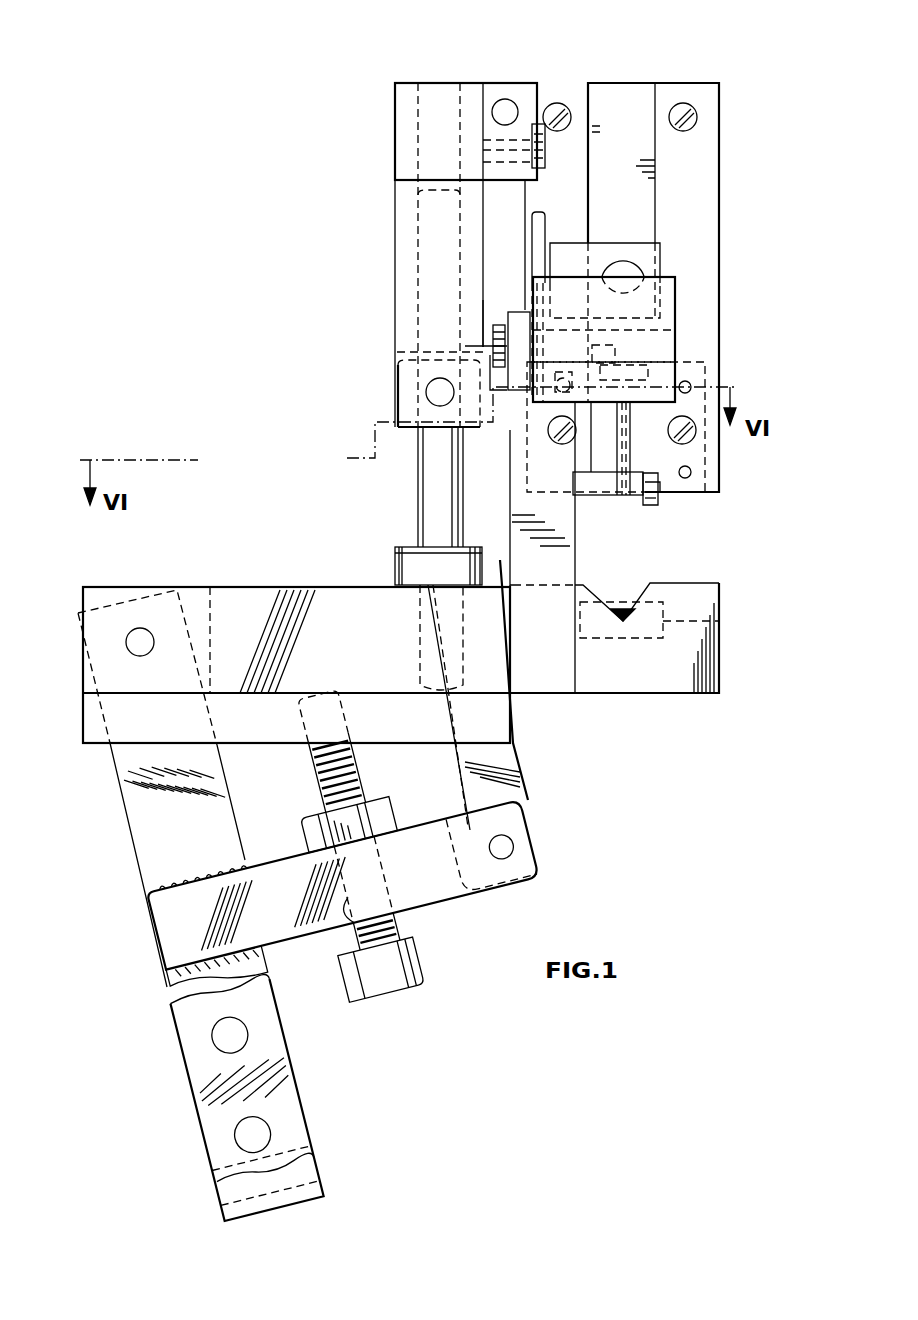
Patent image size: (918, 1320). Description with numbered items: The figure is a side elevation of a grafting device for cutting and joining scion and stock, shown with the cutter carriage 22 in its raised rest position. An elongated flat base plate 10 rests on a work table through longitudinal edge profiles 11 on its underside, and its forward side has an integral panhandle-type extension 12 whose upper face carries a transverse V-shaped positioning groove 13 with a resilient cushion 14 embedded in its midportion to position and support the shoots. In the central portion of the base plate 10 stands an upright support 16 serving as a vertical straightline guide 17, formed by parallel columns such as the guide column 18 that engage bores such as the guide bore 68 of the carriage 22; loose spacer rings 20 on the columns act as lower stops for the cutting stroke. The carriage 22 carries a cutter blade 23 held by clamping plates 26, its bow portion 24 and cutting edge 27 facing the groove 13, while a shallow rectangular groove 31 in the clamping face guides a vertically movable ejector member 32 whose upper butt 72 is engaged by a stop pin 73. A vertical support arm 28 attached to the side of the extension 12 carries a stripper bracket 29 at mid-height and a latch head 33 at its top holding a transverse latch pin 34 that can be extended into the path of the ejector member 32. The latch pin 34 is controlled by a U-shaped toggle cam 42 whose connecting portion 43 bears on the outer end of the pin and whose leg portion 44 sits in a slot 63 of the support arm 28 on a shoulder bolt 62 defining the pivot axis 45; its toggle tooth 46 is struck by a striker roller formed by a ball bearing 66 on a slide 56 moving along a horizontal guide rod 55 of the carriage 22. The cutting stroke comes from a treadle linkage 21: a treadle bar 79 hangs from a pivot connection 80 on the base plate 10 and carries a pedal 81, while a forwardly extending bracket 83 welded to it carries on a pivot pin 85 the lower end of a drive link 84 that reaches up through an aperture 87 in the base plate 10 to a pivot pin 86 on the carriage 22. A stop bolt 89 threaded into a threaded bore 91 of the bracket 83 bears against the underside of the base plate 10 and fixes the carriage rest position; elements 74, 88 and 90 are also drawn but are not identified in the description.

The base plate 10 is at (282, 590).
The longitudinal edge profiles 11 is at (100, 748).
The extension 12 is at (690, 662).
The V-shaped positioning groove 13 is at (640, 605).
The resilient cushion 14 is at (640, 640).
The upright support 16 is at (392, 455).
The vertical straightline guide 17 is at (402, 480).
The guide column 18 is at (430, 502).
The spacer rings 20 is at (397, 560).
The treadle linkage 21 is at (428, 944).
The cutter carriage 22 is at (395, 192).
The cutter blade 23 is at (638, 428).
The bow portion 24 is at (630, 442).
The clamping plates 26 is at (680, 412).
The cutting edge 27 is at (667, 495).
The support arm 28 is at (548, 565).
The stripper bracket 29 is at (692, 474).
The shallow rectangular groove 31 is at (628, 158).
The ejector member 32 is at (632, 357).
The latch head 33 is at (663, 253).
The latch pin 34 is at (668, 280).
The toggle cam 42 is at (690, 362).
The connecting portion 43 is at (683, 320).
The leg portion 44 is at (555, 315).
The pivot axis 45 is at (475, 340).
The toggle tooth 46 is at (540, 232).
The guide rod 55 is at (508, 110).
The slide 56 is at (500, 102).
The shoulder bolt 62 is at (493, 362).
The slot 63 is at (530, 392).
The ball bearing 66 is at (546, 148).
The guide bore 68 is at (420, 115).
The butt 72 is at (600, 345).
The stop pin 73 is at (532, 316).
The pin 74 is at (700, 376).
The treadle bar 79 is at (135, 828).
The pivot connection 80 is at (143, 640).
The pedal 81 is at (318, 1165).
The bracket 83 is at (300, 970).
The drive link 84 is at (530, 765).
The pivot pin 85 is at (506, 847).
The pivot pin 86 is at (420, 382).
The aperture 87 is at (397, 695).
The foot block 88 is at (402, 392).
The stop bolt 89 is at (375, 985).
The upper nut 90 is at (305, 835).
The threaded bore 91 is at (398, 912).